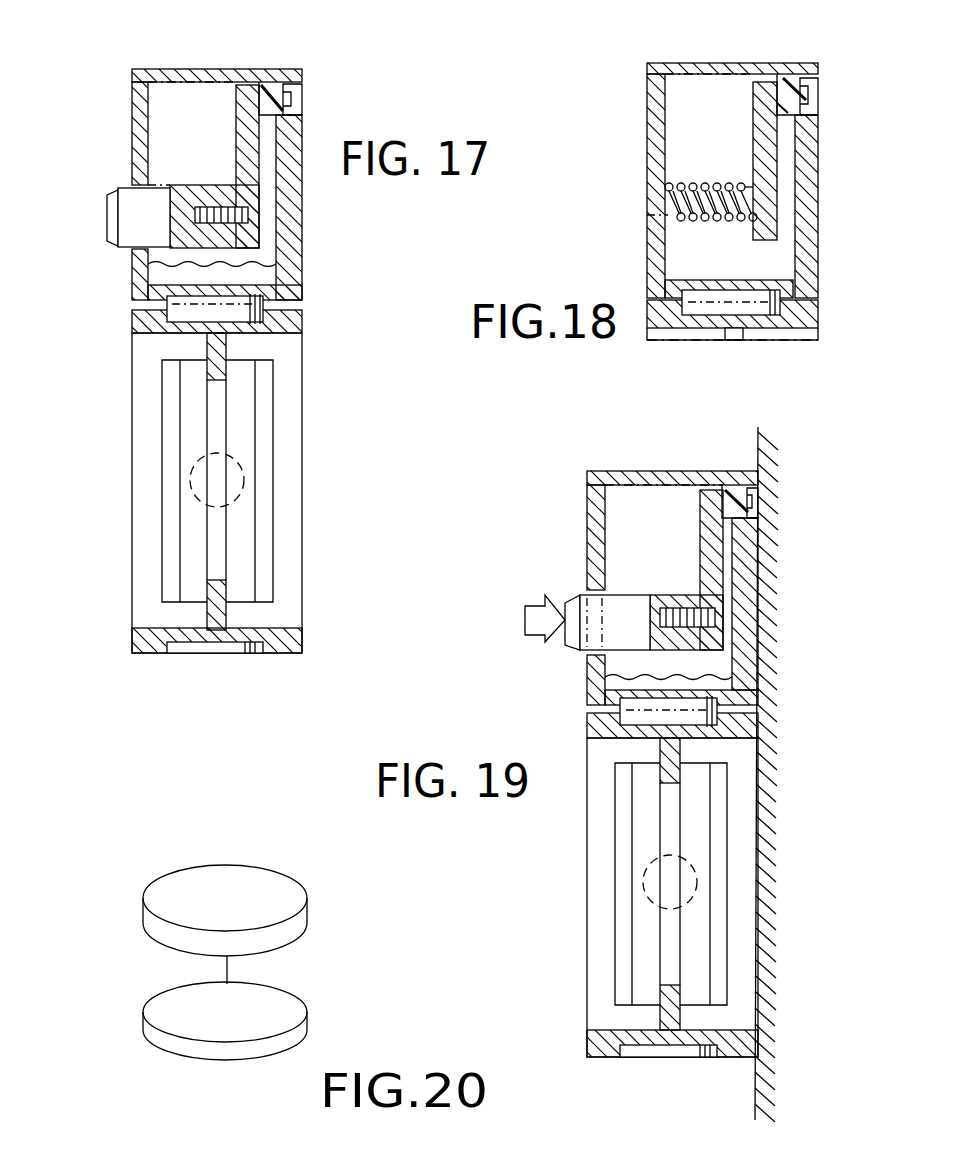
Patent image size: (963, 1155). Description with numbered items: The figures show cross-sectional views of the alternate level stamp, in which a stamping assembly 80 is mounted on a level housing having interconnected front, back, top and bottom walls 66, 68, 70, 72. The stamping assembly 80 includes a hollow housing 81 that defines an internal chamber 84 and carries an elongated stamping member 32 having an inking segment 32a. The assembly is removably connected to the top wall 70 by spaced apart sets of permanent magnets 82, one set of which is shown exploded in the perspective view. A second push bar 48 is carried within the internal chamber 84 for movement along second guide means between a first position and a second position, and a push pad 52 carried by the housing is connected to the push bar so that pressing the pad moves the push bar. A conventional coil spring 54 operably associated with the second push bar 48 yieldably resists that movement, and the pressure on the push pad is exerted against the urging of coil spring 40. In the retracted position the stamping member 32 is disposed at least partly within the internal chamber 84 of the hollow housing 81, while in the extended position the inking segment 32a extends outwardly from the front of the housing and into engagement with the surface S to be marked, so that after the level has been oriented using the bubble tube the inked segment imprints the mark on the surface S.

In FIG. 17, the stamping assembly 80 is at (187, 70).
In FIG. 18, the stamping assembly 80 is at (710, 51).
In FIG. 19, the stamping assembly 80 is at (672, 588).
In FIG. 17, the hollow housing 81 is at (138, 153).
In FIG. 18, the hollow housing 81 is at (652, 135).
In FIG. 19, the hollow housing 81 is at (596, 595).
In FIG. 17, the internal chamber 84 is at (185, 128).
In FIG. 18, the internal chamber 84 is at (725, 100).
In FIG. 19, the internal chamber 84 is at (660, 520).
In FIG. 17, the second push bar 48 is at (236, 153).
In FIG. 18, the second push bar 48 is at (753, 160).
In FIG. 19, the second push bar 48 is at (700, 553).
In FIG. 17, the stamping member 32 is at (268, 85).
In FIG. 18, the stamping member 32 is at (788, 78).
In FIG. 19, the stamping member 32 is at (735, 492).
In FIG. 17, the inking segment 32a is at (300, 92).
In FIG. 18, the inking segment 32a is at (805, 88).
In FIG. 19, the inking segment 32a is at (747, 505).
In FIG. 17, the second push pad 52 is at (110, 224).
In FIG. 19, the second push pad 52 is at (577, 592).
In FIG. 18, the coil spring 54 is at (688, 222).
In FIG. 18, the coil spring 40 is at (700, 175).
In FIG. 17, the permanent magnets 82 is at (244, 297).
In FIG. 19, the permanent magnets 82 is at (650, 712).
In FIG. 20, the permanent magnets 82 is at (318, 974).
In FIG. 17, the top wall 70 is at (300, 300).
In FIG. 18, the top wall 70 is at (795, 300).
In FIG. 19, the top wall 70 is at (735, 700).
In FIG. 17, the front wall 66 is at (302, 326).
In FIG. 18, the front wall 66 is at (815, 318).
In FIG. 19, the front wall 66 is at (760, 728).
In FIG. 17, the back wall 68 is at (132, 320).
In FIG. 18, the back wall 68 is at (645, 320).
In FIG. 19, the back wall 68 is at (587, 729).
In FIG. 17, the bottom wall 72 is at (280, 654).
In FIG. 19, the bottom wall 72 is at (600, 1058).
In FIG. 19, the surface to be marked S is at (760, 586).